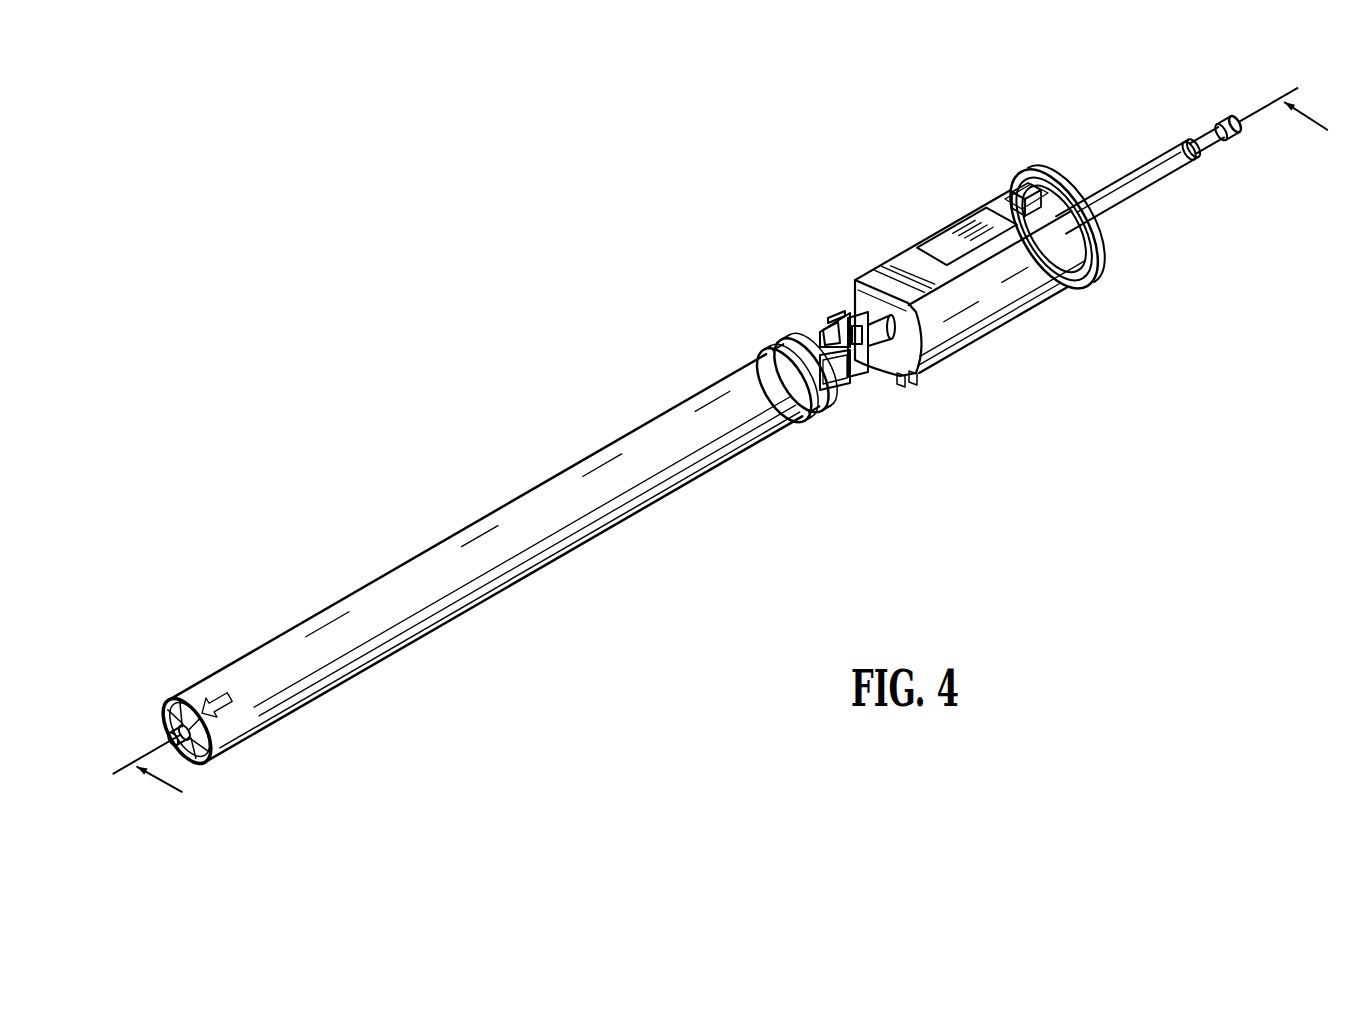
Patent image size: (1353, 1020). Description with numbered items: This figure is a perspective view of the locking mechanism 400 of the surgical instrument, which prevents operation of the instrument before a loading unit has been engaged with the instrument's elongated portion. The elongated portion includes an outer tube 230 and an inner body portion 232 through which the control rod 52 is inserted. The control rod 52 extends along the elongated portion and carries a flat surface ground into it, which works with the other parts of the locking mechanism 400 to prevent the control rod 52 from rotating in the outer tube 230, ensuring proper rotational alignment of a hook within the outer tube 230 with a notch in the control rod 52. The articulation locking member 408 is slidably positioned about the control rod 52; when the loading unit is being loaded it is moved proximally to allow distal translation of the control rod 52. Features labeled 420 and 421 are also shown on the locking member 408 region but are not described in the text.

The locking mechanism 400 is at (600, 283).
The outer tube 230 is at (430, 553).
The inner body portion 232 is at (198, 693).
The articulation locking member 408 is at (1004, 303).
The button 420 is at (1033, 183).
The panel 421 is at (950, 238).
The control rod 52 is at (1142, 177).